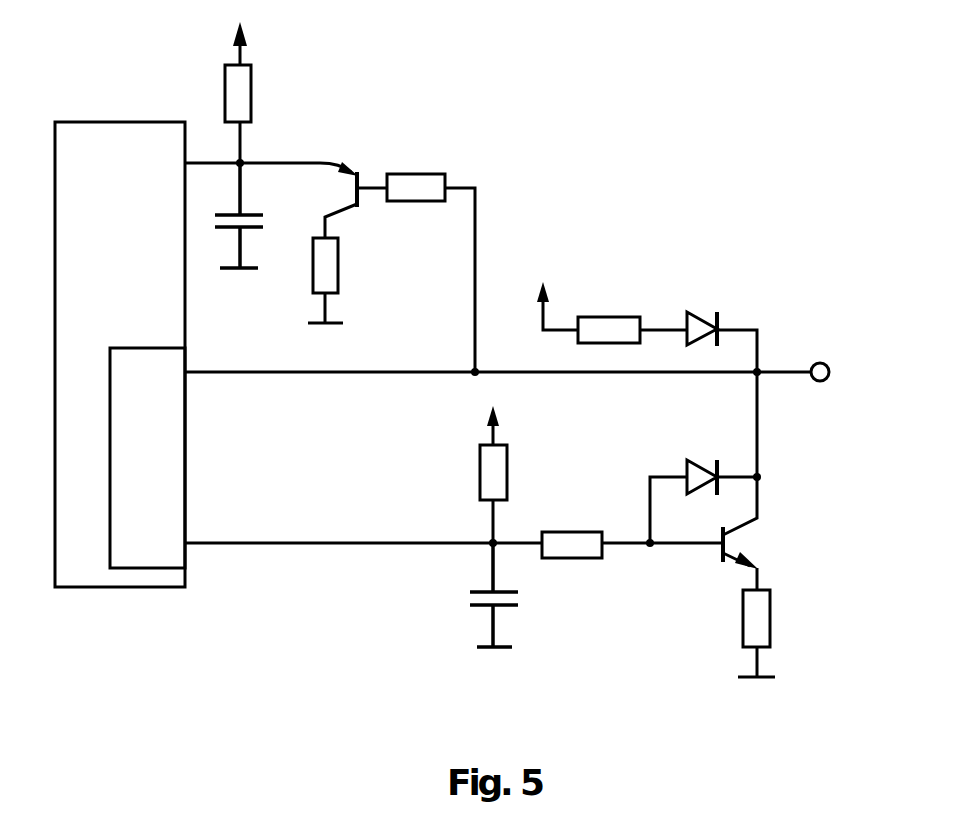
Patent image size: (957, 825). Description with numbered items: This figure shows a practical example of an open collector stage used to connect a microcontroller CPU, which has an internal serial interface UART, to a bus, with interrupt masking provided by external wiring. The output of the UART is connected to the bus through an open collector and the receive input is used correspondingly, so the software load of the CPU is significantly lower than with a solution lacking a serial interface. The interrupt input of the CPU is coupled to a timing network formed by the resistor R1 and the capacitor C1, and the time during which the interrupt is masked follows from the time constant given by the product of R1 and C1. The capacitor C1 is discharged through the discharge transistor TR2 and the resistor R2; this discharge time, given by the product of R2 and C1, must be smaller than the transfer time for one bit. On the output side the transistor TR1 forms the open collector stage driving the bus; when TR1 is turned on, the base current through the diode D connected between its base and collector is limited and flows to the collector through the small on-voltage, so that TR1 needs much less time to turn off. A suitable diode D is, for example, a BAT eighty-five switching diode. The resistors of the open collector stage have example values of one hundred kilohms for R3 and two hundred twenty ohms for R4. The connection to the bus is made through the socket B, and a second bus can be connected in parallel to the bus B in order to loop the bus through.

The element CPU is at (73, 575).
The element UART is at (173, 472).
The resistor R1 is at (255, 100).
The capacitor C1 is at (245, 212).
The discharge transistor TR2 is at (357, 175).
The resistor R2 is at (341, 278).
The resistor R3 is at (578, 337).
The socket B is at (833, 377).
The diode D is at (687, 462).
The transistor TR1 is at (757, 565).
The resistor R4 is at (763, 628).